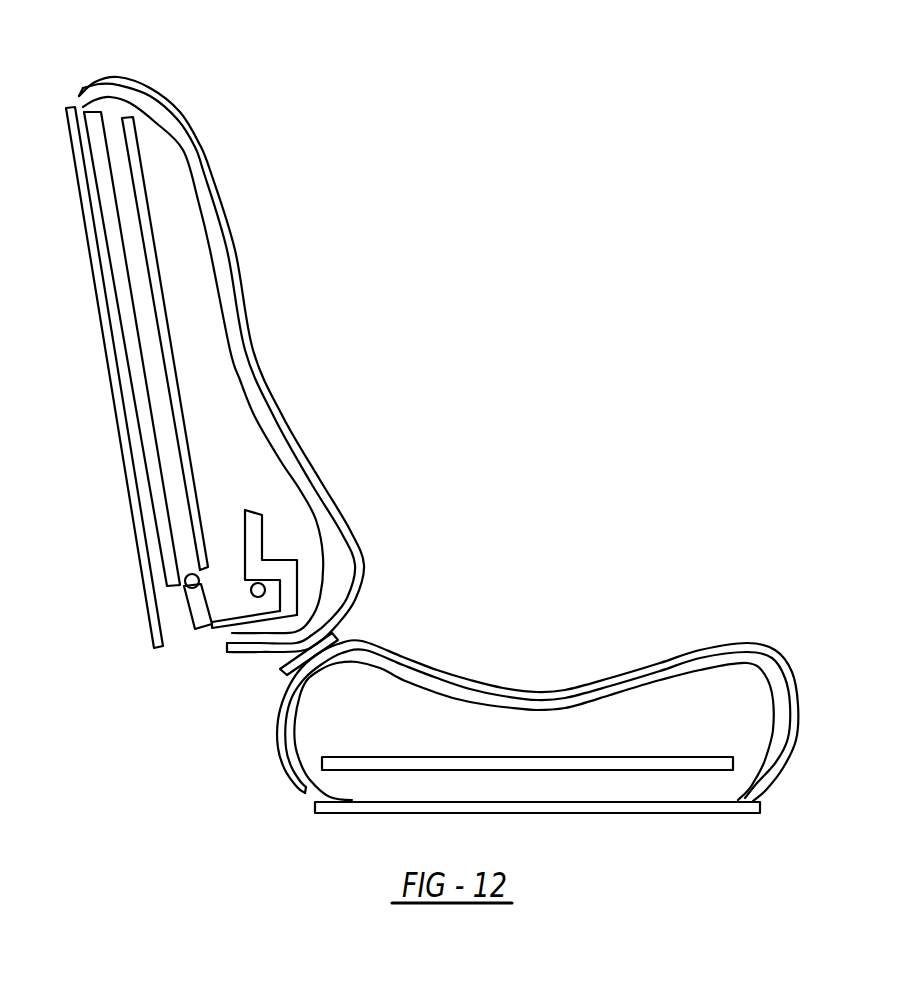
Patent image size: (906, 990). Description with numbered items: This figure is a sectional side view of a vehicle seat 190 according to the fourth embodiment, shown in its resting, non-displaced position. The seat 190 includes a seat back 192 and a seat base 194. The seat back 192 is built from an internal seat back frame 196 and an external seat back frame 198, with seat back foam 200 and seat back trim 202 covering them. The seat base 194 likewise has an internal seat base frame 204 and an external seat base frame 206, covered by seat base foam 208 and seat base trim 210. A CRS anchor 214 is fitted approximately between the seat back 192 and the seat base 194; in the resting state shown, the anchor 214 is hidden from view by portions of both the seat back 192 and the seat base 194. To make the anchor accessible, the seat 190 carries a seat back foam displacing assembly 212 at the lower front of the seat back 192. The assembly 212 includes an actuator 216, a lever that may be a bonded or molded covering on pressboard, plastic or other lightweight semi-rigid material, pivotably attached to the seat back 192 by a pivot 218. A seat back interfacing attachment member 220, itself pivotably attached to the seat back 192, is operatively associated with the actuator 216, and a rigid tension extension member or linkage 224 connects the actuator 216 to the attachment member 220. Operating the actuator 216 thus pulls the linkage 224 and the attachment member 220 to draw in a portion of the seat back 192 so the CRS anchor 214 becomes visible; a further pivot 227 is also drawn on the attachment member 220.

The seat 190 is at (357, 150).
The seat back 192 is at (178, 262).
The seat base 194 is at (728, 690).
The internal seat back frame 196 is at (133, 160).
The external seat back frame 198 is at (115, 405).
The seat back foam 200 is at (215, 372).
The seat back trim 202 is at (290, 430).
The internal seat base frame 204 is at (487, 763).
The external seat base frame 206 is at (570, 813).
The seat base foam 208 is at (653, 730).
The seat base trim 210 is at (795, 743).
The seat back foam displacing assembly 212 is at (188, 605).
The CRS anchor 214 is at (287, 670).
The actuator 216 is at (290, 572).
The pivot 218 is at (186, 582).
The seat back interfacing attachment member 220 is at (257, 535).
The rigid tension extension member or linkage 224 is at (220, 627).
The pivot pin 227 is at (265, 590).